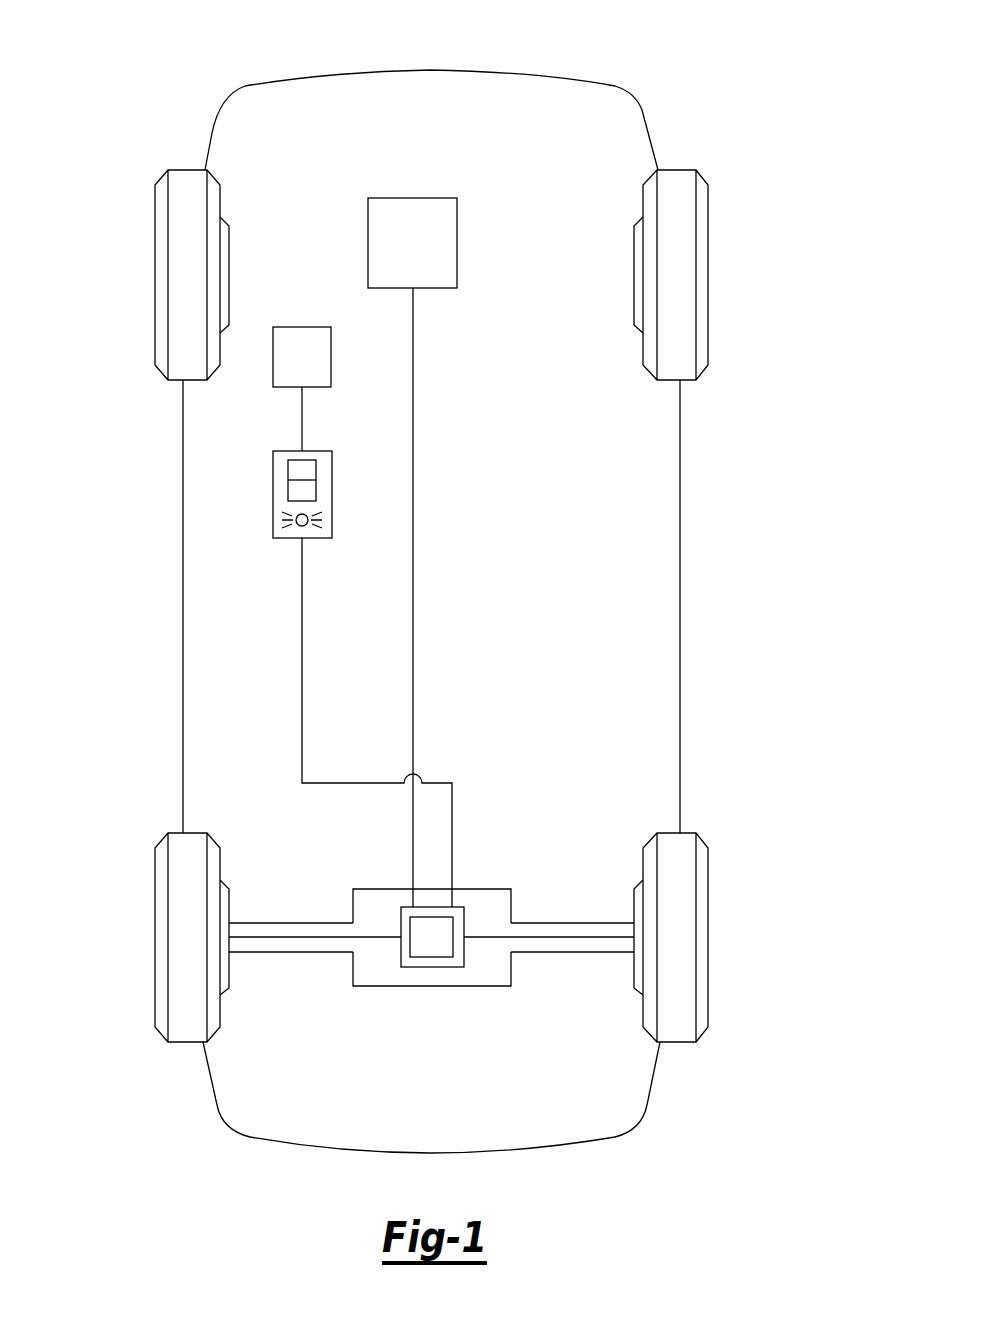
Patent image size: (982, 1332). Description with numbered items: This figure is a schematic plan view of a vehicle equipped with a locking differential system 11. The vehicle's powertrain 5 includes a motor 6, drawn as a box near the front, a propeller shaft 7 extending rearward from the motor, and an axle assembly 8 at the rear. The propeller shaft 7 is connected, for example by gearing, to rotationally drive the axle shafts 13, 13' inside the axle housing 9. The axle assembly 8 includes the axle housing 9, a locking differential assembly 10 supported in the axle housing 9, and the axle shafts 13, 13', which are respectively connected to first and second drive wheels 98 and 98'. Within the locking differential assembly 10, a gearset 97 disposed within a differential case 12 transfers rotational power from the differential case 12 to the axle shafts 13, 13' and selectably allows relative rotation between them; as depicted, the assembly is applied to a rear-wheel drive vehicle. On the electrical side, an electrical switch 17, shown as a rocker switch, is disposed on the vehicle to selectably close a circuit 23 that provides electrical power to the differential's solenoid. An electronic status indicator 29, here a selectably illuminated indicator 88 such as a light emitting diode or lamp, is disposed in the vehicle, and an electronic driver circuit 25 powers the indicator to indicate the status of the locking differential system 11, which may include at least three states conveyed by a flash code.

The locking differential assembly 10 is at (530, 50).
The locking differential system 11 is at (332, 65).
The powertrain 5 is at (460, 193).
The motor 6 is at (424, 255).
The electronic driver circuit 25 is at (316, 372).
The electrical switch 17 is at (273, 494).
The electronic status indicator 29 is at (307, 523).
The selectably illuminated indicator 88 is at (302, 520).
The propeller shaft 7 is at (413, 452).
The circuit 23 is at (302, 645).
The axle assembly 8 is at (523, 893).
The axle housing 9 is at (338, 953).
The axle shaft 13 is at (315, 913).
The axle shaft 13' is at (549, 914).
The gearset 97 is at (417, 967).
The differential case 12 is at (442, 957).
The first drive wheel 98 is at (163, 937).
The second drive wheel 98' is at (703, 937).